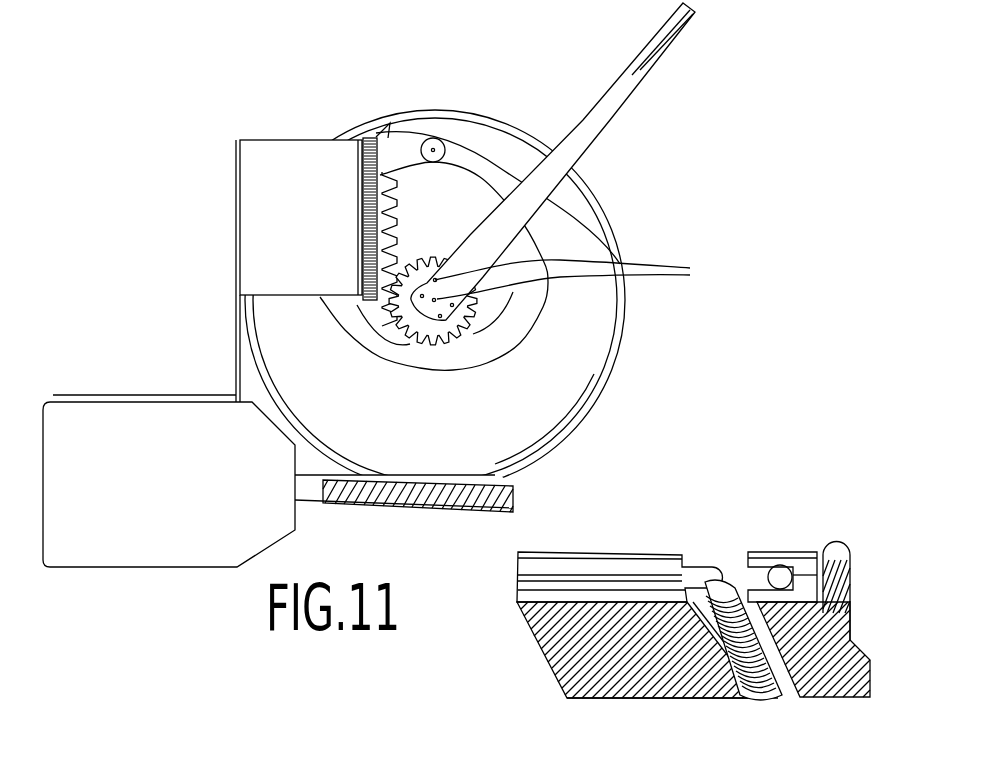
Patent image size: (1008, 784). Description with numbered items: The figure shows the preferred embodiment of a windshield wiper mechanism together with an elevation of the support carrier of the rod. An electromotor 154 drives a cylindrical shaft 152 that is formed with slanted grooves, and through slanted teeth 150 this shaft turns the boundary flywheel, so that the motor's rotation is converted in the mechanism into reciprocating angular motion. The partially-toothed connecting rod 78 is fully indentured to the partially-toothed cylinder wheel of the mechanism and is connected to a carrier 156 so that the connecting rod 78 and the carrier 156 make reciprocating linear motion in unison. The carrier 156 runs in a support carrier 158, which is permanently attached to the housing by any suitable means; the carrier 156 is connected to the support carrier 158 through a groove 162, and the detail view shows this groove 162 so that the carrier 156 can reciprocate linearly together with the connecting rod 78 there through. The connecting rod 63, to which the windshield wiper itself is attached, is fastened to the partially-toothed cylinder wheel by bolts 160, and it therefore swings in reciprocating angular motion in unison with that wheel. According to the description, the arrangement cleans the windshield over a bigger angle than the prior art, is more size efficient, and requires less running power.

The connecting rod 63 is at (586, 137).
The partially-toothed connecting rod 78 is at (400, 212).
The teeth 150 is at (606, 394).
The cylindrical shaft 152 is at (386, 504).
The electromotor 154 is at (117, 468).
The carrier 156 is at (382, 132).
The support carrier 158 is at (286, 193).
The bolts 160 is at (585, 274).
The groove 162 is at (747, 568).